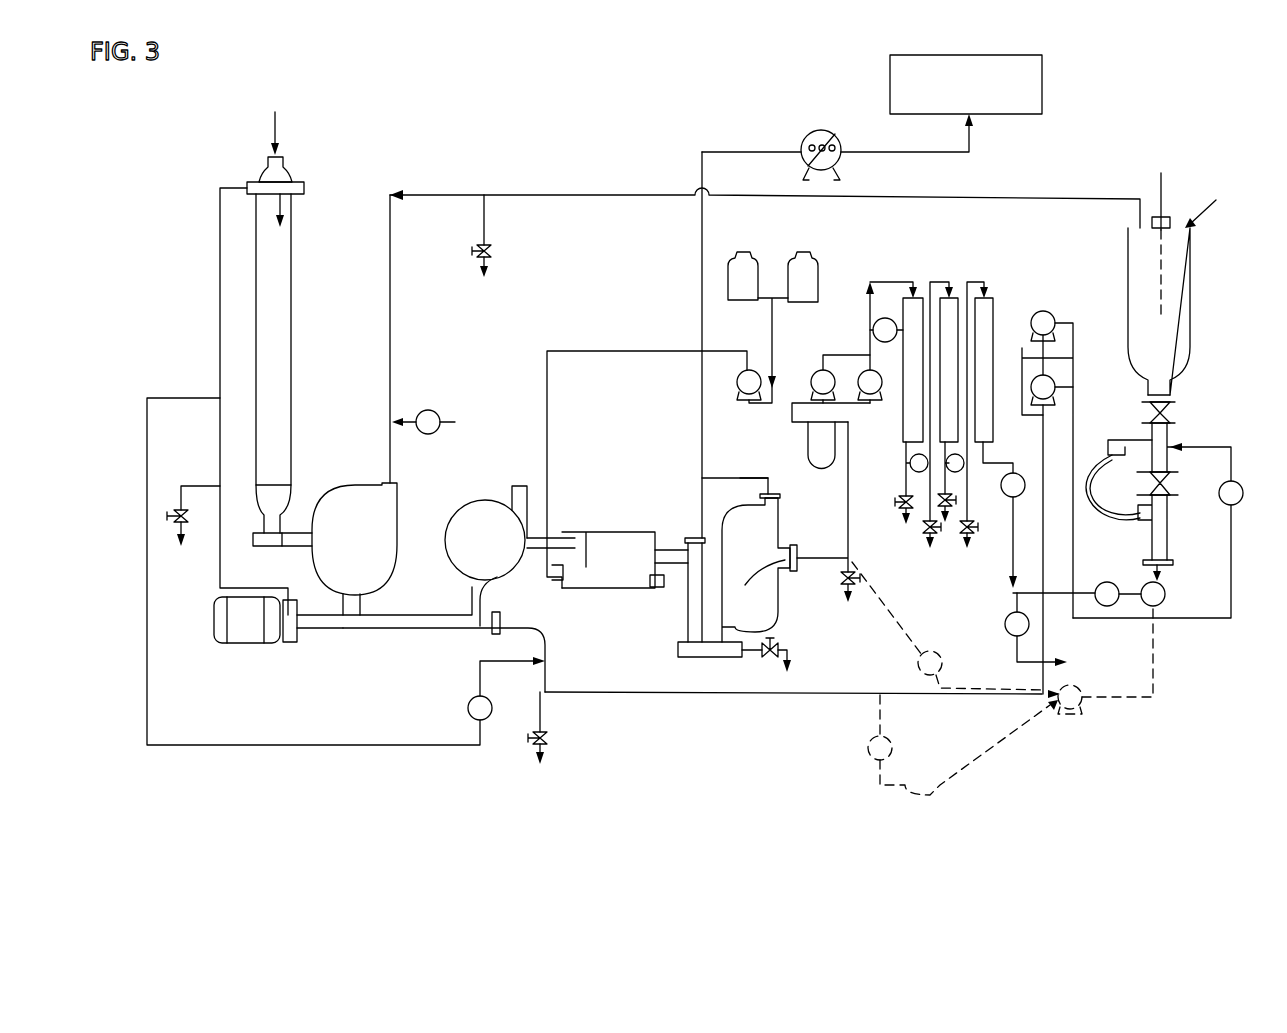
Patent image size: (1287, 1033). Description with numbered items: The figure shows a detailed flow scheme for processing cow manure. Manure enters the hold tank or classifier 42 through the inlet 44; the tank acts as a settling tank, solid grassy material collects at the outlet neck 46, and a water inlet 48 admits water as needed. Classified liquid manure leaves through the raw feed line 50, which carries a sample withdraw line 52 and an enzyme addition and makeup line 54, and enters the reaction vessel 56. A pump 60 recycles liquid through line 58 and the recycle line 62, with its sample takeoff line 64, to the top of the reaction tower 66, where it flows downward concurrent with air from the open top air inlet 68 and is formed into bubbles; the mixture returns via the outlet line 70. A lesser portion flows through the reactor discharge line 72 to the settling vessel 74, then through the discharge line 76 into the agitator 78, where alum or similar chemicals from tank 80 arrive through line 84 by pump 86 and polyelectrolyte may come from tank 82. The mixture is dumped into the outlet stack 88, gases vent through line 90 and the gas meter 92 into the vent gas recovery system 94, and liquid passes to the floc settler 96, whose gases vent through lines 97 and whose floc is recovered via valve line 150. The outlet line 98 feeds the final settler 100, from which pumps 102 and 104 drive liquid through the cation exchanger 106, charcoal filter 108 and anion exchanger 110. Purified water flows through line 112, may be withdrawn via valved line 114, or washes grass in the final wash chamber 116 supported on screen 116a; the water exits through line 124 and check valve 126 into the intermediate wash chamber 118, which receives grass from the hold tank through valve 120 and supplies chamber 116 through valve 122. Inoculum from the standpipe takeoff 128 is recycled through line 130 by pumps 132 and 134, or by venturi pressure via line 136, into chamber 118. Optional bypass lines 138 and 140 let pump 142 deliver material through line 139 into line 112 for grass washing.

The hold tank or classifier 42 is at (1190, 295).
The inlet 44 is at (1161, 180).
The outlet neck 46 is at (1176, 382).
The water inlet 48 is at (1178, 214).
The raw feed line 50 is at (518, 195).
The sample withdraw line 52 is at (484, 242).
The enzyme addition and makeup line 54 is at (403, 430).
The reaction vessel 56 is at (352, 485).
The line 58 is at (325, 630).
The pump 60 is at (250, 645).
The recycle line 62 is at (220, 570).
The sample takeoff line 64 is at (193, 466).
The reaction tower 66 is at (292, 380).
The open top air inlet 68 is at (284, 163).
The outlet line 70 is at (290, 548).
The reactor discharge line 72 is at (400, 630).
The enzyme or settling vessel 74 is at (456, 575).
The discharge line 76 is at (528, 540).
The mixing chamber or agitator 78 is at (548, 618).
The tank 80 is at (728, 272).
The tank 82 is at (812, 304).
The line 84 is at (547, 394).
The pump 86 is at (742, 402).
The outlet stack 88 is at (688, 600).
The line 90 is at (702, 306).
The gas meter 92 is at (803, 148).
The vent gas recovery system 94 is at (890, 66).
The floc settler 96 is at (778, 612).
The lines 97 is at (740, 478).
The outlet line 98 is at (875, 290).
The final settler 100 is at (810, 462).
The pump 102 is at (812, 384).
The pump 104 is at (860, 386).
The cation exchanger 106 is at (903, 416).
The charcoal filter 108 is at (949, 298).
The anion exchanger 110 is at (990, 312).
The line 112 is at (1013, 534).
The valved line 114 is at (1042, 662).
The grass or final wash chamber 116 is at (1150, 530).
The screen 116a is at (1168, 565).
The intermediate wash chamber 118 is at (1170, 437).
The valve 120 is at (1176, 412).
The valve 122 is at (1152, 483).
The line 124 is at (1090, 500).
The check valve 126 is at (1150, 470).
The standpipe inoculum takeoff 128 is at (497, 590).
The line 130 is at (568, 692).
The pump 132 is at (1056, 390).
The pump 134 is at (1056, 318).
The line 136 is at (278, 748).
The clarifier bypass line 138 is at (918, 632).
The line 139 is at (1115, 700).
The bypass line 140 is at (958, 788).
The pump 142 is at (1045, 710).
The valve line 150 is at (760, 652).